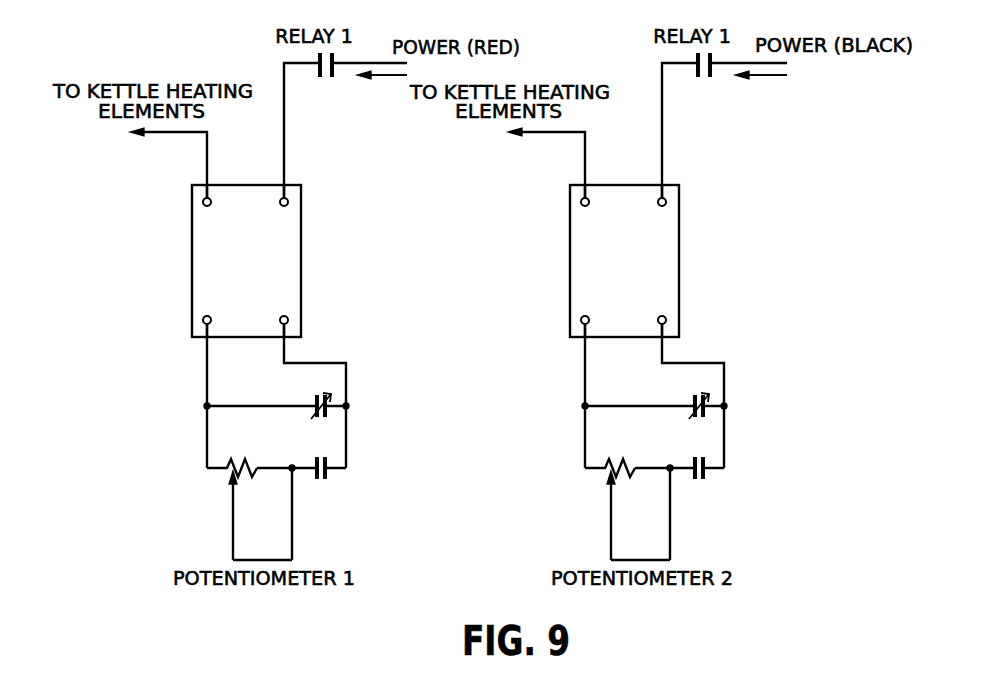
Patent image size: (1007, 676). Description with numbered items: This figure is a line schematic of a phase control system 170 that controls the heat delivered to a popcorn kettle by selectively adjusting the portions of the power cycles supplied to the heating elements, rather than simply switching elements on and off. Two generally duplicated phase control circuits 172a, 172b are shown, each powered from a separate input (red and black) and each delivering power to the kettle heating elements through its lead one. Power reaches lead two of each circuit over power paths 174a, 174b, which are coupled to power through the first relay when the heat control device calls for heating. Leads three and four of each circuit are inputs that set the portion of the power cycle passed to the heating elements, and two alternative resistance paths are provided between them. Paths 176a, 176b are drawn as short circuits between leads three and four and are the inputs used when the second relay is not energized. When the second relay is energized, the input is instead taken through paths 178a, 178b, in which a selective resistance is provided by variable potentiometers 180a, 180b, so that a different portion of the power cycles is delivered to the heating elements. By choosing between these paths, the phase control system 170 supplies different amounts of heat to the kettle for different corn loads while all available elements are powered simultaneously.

The phase control system 170 is at (832, 240).
The phase control circuit 172a is at (670, 261).
The phase control circuit 172b is at (301, 266).
The power path 174a is at (707, 130).
The power path 174b is at (283, 148).
The path 176a is at (622, 394).
The path 176b is at (237, 405).
The path 178a is at (695, 497).
The path 178b is at (272, 470).
The variable potentiometer 180a is at (566, 509).
The variable potentiometer 180b is at (232, 472).